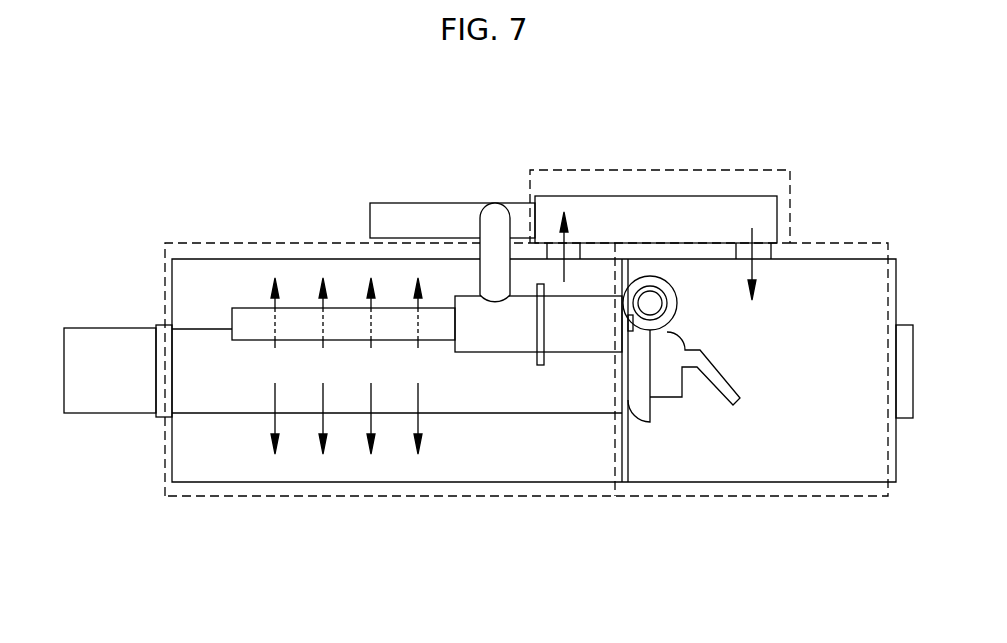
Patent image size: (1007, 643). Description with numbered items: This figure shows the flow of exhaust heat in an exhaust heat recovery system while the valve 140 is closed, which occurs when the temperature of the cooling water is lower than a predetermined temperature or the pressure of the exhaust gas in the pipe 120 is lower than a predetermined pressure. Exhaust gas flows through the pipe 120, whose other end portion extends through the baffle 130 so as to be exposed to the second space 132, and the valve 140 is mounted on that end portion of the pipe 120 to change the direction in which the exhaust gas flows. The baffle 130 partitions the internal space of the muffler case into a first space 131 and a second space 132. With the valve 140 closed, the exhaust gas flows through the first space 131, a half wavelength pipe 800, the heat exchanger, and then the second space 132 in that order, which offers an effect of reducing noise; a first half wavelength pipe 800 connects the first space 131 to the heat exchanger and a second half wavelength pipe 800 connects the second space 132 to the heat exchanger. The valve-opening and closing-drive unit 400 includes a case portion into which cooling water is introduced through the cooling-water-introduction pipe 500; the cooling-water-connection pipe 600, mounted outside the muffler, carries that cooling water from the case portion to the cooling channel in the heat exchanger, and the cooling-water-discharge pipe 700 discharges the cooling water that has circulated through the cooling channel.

The pipe 120 is at (105, 395).
The baffle 130 is at (615, 483).
The first space 131 is at (398, 455).
The second space 132 is at (808, 430).
The valve 140 is at (668, 373).
The valve-opening and closing-drive unit 400 is at (488, 327).
The cooling-water-introduction pipe 500 is at (308, 323).
The cooling-water-connection pipe 600 is at (493, 215).
The cooling-water-discharge pipe 700 is at (420, 217).
The half wavelength pipe 800 is at (763, 250).